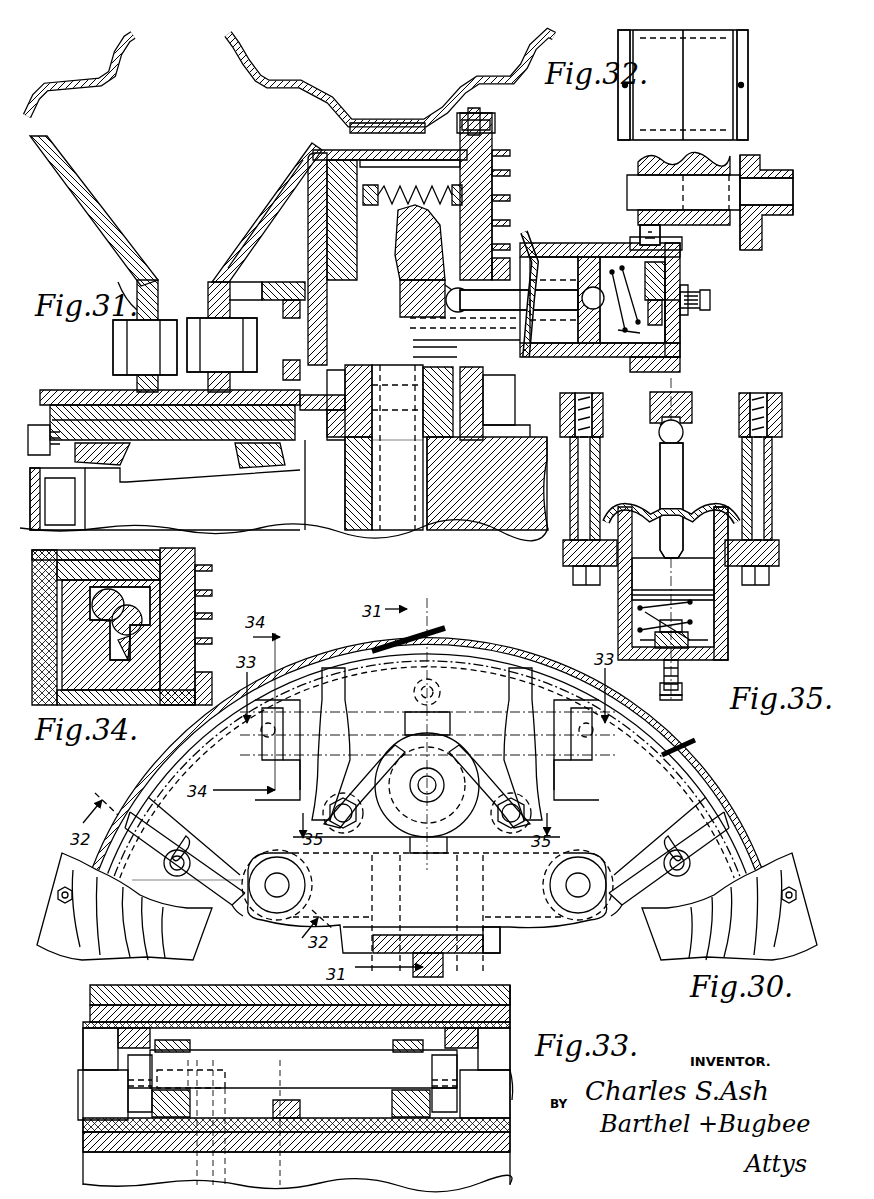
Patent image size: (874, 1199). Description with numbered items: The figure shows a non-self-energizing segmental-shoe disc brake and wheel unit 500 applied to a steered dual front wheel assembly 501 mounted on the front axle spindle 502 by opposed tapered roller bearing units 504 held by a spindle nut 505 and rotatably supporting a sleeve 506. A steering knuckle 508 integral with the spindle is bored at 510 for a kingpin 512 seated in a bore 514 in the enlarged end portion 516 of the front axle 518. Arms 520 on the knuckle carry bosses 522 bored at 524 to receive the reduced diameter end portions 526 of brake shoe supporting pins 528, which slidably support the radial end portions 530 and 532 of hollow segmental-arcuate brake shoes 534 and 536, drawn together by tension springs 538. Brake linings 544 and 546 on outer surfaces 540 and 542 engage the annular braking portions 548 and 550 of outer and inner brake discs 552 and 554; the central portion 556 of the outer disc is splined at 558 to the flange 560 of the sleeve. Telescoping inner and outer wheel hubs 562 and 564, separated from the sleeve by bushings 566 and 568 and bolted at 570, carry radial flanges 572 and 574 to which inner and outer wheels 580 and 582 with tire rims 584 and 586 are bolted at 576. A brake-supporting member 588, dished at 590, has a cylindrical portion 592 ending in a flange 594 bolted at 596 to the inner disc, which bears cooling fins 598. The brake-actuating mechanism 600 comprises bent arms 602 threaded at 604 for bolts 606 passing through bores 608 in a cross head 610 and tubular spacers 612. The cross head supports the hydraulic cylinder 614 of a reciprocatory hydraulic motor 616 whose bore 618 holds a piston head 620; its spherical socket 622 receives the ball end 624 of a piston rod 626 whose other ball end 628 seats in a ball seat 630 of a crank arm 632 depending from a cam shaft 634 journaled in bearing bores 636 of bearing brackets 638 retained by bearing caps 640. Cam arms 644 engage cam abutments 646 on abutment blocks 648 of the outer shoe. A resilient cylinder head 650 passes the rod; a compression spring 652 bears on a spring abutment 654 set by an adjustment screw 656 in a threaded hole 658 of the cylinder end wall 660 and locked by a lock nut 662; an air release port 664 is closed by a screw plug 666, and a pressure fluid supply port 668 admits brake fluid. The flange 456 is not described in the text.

In FIG. 30, the brake backing plate flange 456 is at (718, 754).
In FIG. 31, the non-self-energizing segmental-shoe disc brake and wheel unit 500 is at (118, 280).
In FIG. 31, the steered dual front wheel assembly 501 is at (173, 72).
In FIG. 31, the front axle spindle 502 is at (280, 535).
In FIG. 31, the tapered roller bearing units 504 is at (105, 482).
In FIG. 31, the spindle nut 505 is at (58, 495).
In FIG. 31, the sleeve 506 is at (180, 443).
In FIG. 31, the steering knuckle 508 is at (350, 365).
In FIG. 30, the steering knuckle 508 is at (495, 953).
In FIG. 31, the bore 510 is at (385, 365).
In FIG. 31, the kingpin 512 is at (398, 530).
In FIG. 31, the bore 514 is at (365, 530).
In FIG. 31, the enlarged end portion 516 is at (458, 530).
In FIG. 33, the enlarged end portion 516 is at (512, 995).
In FIG. 31, the front axle 518 is at (510, 530).
In FIG. 30, the front axle 518 is at (490, 957).
In FIG. 30, the arms 520 is at (580, 955).
In FIG. 31, the bosses 522 is at (515, 425).
In FIG. 32, the bosses 522 is at (768, 170).
In FIG. 30, the bosses 522 is at (255, 920).
In FIG. 32, the bore 524 is at (790, 175).
In FIG. 31, the reduced diameter end portions 526 is at (492, 403).
In FIG. 32, the reduced diameter end portions 526 is at (790, 190).
In FIG. 30, the reduced diameter end portions 526 is at (290, 885).
In FIG. 31, the brake shoe supporting pins 528 is at (398, 453).
In FIG. 32, the brake shoe supporting pins 528 is at (640, 195).
In FIG. 32, the radial end portion 530 is at (640, 163).
In FIG. 31, the radial end portion 532 is at (454, 365).
In FIG. 32, the radial end portion 532 is at (741, 160).
In FIG. 30, the radial end portion 532 is at (236, 912).
In FIG. 31, the brake shoe 534 is at (360, 165).
In FIG. 32, the brake shoe 534 is at (652, 33).
In FIG. 34, the brake shoe 534 is at (68, 560).
In FIG. 33, the brake shoe 534 is at (512, 1025).
In FIG. 31, the brake shoe 536 is at (430, 186).
In FIG. 32, the brake shoe 536 is at (698, 33).
In FIG. 34, the brake shoe 536 is at (140, 570).
In FIG. 30, the brake shoe 536 is at (705, 800).
In FIG. 33, the brake shoe 536 is at (512, 1100).
In FIG. 31, the tension springs 538 is at (405, 162).
In FIG. 30, the tension springs 538 is at (400, 700).
In FIG. 32, the outer surface 540 is at (636, 72).
In FIG. 32, the outer surface 542 is at (731, 72).
In FIG. 31, the brake lining 544 is at (352, 140).
In FIG. 32, the brake lining 544 is at (618, 45).
In FIG. 33, the brake lining 544 is at (90, 1014).
In FIG. 31, the brake lining 546 is at (445, 110).
In FIG. 32, the brake lining 546 is at (748, 58).
In FIG. 30, the brake lining 546 is at (745, 770).
In FIG. 33, the brake lining 546 is at (83, 1125).
In FIG. 31, the annular braking portion 548 is at (330, 320).
In FIG. 33, the annular braking portion 548 is at (90, 995).
In FIG. 31, the annular braking portion 550 is at (510, 195).
In FIG. 34, the annular braking portion 550 is at (197, 633).
In FIG. 33, the annular braking portion 550 is at (83, 1142).
In FIG. 31, the outer brake disc 552 is at (288, 286).
In FIG. 31, the inner brake disc 554 is at (494, 140).
In FIG. 34, the inner brake disc 554 is at (185, 583).
In FIG. 31, the radially-extending central portion 556 is at (293, 324).
In FIG. 31, the splined connection 558 is at (295, 372).
In FIG. 31, the splined flange 560 is at (330, 395).
In FIG. 31, the inner wheel hub 562 is at (270, 405).
In FIG. 31, the outer wheel hub 564 is at (97, 398).
In FIG. 31, the bushing 566 is at (140, 450).
In FIG. 31, the bushing 568 is at (212, 450).
In FIG. 31, the bolt 570 is at (32, 425).
In FIG. 31, the radial flange 572 is at (245, 315).
In FIG. 31, the radial flange 574 is at (156, 312).
In FIG. 31, the bolt 576 is at (113, 346).
In FIG. 31, the inner wheel 580 is at (263, 207).
In FIG. 31, the outer wheel 582 is at (112, 227).
In FIG. 31, the inner tire rim 584 is at (323, 100).
In FIG. 31, the outer tire rim 586 is at (70, 78).
In FIG. 31, the brake-supporting member 588 is at (310, 233).
In FIG. 31, the dished portion 590 is at (257, 272).
In FIG. 31, the axial cylindrical portion 592 is at (385, 150).
In FIG. 30, the axial cylindrical portion 592 is at (492, 645).
In FIG. 31, the radial flange 594 is at (474, 108).
In FIG. 31, the bolt 596 is at (487, 118).
In FIG. 31, the cooling fins 598 is at (510, 170).
In FIG. 34, the cooling fins 598 is at (195, 565).
In FIG. 30, the cooling fins 598 is at (165, 932).
In FIG. 31, the brake-actuating mechanism 600 is at (552, 236).
In FIG. 35, the brake-actuating mechanism 600 is at (730, 648).
In FIG. 31, the bent arms 602 is at (410, 318).
In FIG. 35, the bent arms 602 is at (572, 390).
In FIG. 30, the bent arms 602 is at (335, 668).
In FIG. 31, the threaded bore 604 is at (410, 330).
In FIG. 35, the threaded bore 604 is at (603, 410).
In FIG. 35, the bolts 606 is at (590, 475).
In FIG. 30, the bolts 606 is at (343, 828).
In FIG. 35, the bores 608 is at (565, 560).
In FIG. 35, the cross head 610 is at (608, 580).
In FIG. 30, the cross head 610 is at (366, 840).
In FIG. 31, the tubular spacers 612 is at (496, 358).
In FIG. 35, the tubular spacers 612 is at (603, 458).
In FIG. 31, the hydraulic cylinder 614 is at (575, 240).
In FIG. 35, the hydraulic cylinder 614 is at (728, 630).
In FIG. 35, the reciprocatory hydraulic motor 616 is at (617, 632).
In FIG. 35, the bore 618 is at (632, 614).
In FIG. 31, the piston head 620 is at (595, 352).
In FIG. 35, the piston head 620 is at (692, 578).
In FIG. 31, the spherical socket 622 is at (595, 257).
In FIG. 31, the ball end 624 is at (580, 290).
In FIG. 31, the piston rod 626 is at (540, 303).
In FIG. 35, the piston rod 626 is at (683, 488).
In FIG. 33, the piston rod 626 is at (325, 1185).
In FIG. 31, the ball end 628 is at (462, 294).
In FIG. 35, the ball end 628 is at (683, 436).
In FIG. 33, the ball end 628 is at (273, 1110).
In FIG. 31, the ball seat 630 is at (425, 298).
In FIG. 35, the ball seat 630 is at (655, 427).
In FIG. 31, the crank arm 632 is at (437, 245).
In FIG. 35, the crank arm 632 is at (675, 392).
In FIG. 33, the crank arm 632 is at (340, 1102).
In FIG. 31, the cam shaft 634 is at (395, 245).
In FIG. 30, the cam shaft 634 is at (500, 700).
In FIG. 33, the cam shaft 634 is at (290, 1043).
In FIG. 33, the bearing bores 636 is at (168, 1082).
In FIG. 33, the bearing brackets 638 is at (175, 1117).
In FIG. 33, the bearing caps 640 is at (190, 1045).
In FIG. 35, the cam arms 644 is at (735, 604).
In FIG. 34, the cam arms 644 is at (150, 605).
In FIG. 30, the cam arms 644 is at (262, 745).
In FIG. 33, the cam arms 644 is at (140, 1117).
In FIG. 34, the cam abutments 646 is at (125, 650).
In FIG. 30, the cam abutments 646 is at (255, 780).
In FIG. 33, the cam abutments 646 is at (128, 1088).
In FIG. 34, the abutment blocks 648 is at (100, 683).
In FIG. 33, the abutment blocks 648 is at (118, 1058).
In FIG. 31, the cylinder head 650 is at (530, 235).
In FIG. 35, the cylinder head 650 is at (645, 505).
In FIG. 31, the compression spring 652 is at (668, 272).
In FIG. 35, the compression spring 652 is at (700, 615).
In FIG. 31, the spring abutment 654 is at (668, 280).
In FIG. 35, the spring abutment 654 is at (690, 652).
In FIG. 31, the adjustment screw 656 is at (712, 299).
In FIG. 35, the adjustment screw 656 is at (684, 698).
In FIG. 31, the threaded hole 658 is at (636, 305).
In FIG. 35, the threaded hole 658 is at (655, 660).
In FIG. 31, the cylinder end wall 660 is at (682, 335).
In FIG. 35, the cylinder end wall 660 is at (680, 675).
In FIG. 31, the lock nut 662 is at (690, 310).
In FIG. 35, the lock nut 662 is at (672, 686).
In FIG. 31, the air release port 664 is at (682, 252).
In FIG. 31, the screw plug 666 is at (660, 234).
In FIG. 31, the pressure fluid supply port 668 is at (672, 360).